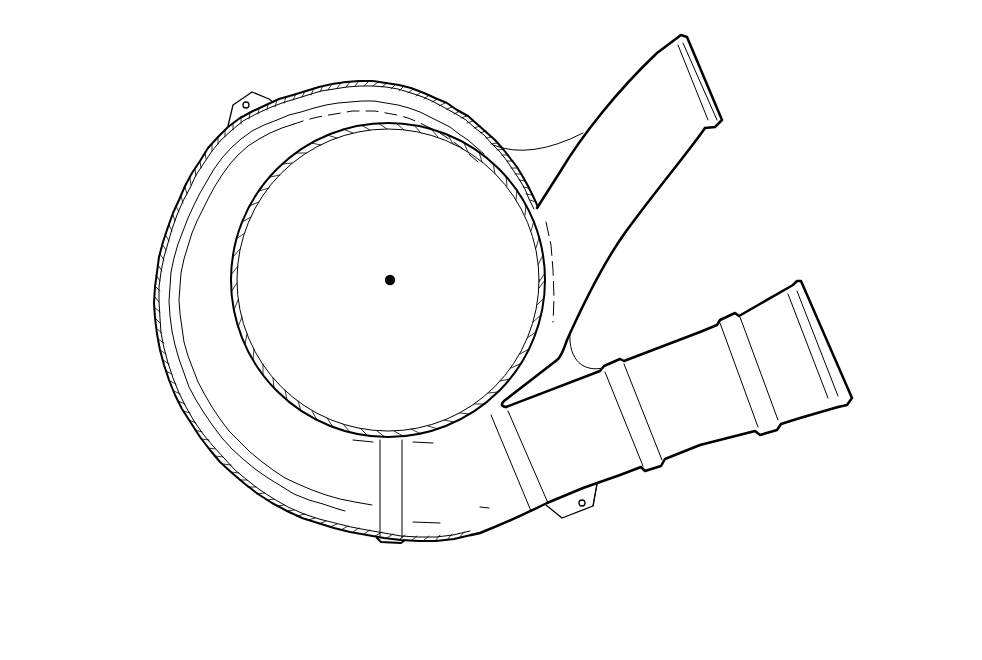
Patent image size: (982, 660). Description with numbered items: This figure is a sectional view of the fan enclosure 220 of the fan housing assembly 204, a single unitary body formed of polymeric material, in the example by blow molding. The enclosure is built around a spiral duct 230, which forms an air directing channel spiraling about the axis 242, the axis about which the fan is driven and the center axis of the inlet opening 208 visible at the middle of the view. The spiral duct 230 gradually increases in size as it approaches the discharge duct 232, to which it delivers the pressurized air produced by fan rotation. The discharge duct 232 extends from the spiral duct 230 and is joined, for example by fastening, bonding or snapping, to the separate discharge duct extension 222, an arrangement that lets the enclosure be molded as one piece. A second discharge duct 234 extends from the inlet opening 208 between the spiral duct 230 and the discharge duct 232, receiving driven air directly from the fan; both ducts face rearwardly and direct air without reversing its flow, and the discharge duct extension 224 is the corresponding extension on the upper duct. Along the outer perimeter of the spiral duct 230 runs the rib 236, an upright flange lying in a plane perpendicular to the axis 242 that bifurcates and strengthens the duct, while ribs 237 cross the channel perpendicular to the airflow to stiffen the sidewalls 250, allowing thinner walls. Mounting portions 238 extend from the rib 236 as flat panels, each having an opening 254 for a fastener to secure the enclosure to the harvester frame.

The fan housing assembly 204 is at (88, 248).
The inlet opening 208 is at (275, 182).
The fan enclosure 220 is at (178, 199).
The discharge duct extension 222 is at (738, 437).
The discharge duct extension 224 is at (688, 143).
The spiral duct 230 is at (377, 83).
The discharge duct 232 is at (595, 475).
The discharge duct 234 is at (583, 313).
The rib 236 is at (292, 90).
The ribs 237 is at (380, 492).
The mounting portions 238 is at (227, 121).
The axis 242 is at (390, 280).
The sidewalls 250 is at (285, 132).
The opening 254 is at (594, 498).